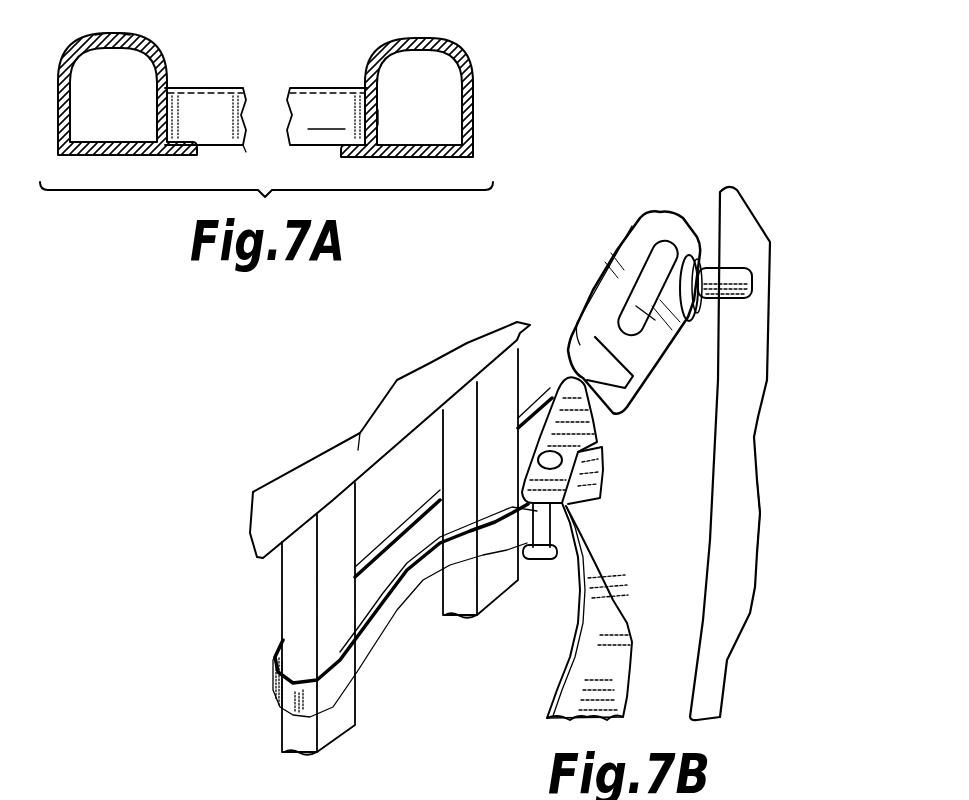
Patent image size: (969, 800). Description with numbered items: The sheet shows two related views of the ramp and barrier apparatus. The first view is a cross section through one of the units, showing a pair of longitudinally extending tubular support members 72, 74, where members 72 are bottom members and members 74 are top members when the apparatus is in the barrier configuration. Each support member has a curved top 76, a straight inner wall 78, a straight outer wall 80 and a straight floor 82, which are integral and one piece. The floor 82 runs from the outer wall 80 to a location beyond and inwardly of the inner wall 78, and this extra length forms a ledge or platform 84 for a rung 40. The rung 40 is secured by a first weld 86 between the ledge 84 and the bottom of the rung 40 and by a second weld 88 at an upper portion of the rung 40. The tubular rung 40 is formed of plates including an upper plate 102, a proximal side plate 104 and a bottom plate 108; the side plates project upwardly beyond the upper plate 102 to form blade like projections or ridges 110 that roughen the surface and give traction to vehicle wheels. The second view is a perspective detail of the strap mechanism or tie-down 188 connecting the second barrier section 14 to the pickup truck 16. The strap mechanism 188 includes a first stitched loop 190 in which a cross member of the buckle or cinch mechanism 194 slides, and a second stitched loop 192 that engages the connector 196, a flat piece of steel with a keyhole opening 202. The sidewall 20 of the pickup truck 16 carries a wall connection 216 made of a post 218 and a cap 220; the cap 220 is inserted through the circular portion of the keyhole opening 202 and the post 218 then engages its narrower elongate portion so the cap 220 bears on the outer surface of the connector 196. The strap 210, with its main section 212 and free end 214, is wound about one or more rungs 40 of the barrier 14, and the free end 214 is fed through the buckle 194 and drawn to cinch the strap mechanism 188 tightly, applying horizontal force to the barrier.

In FIG. 7B, the second ramp or barrier or apparatus section 14 is at (373, 561).
In FIG. 7B, the pickup truck 16 is at (760, 520).
In FIG. 7B, the sidewall 20 is at (769, 365).
In FIG. 7A, the rung 40 is at (228, 88).
In FIG. 7B, the rung 40 is at (282, 614).
In FIG. 7A, the tubular support member 72 is at (83, 38).
In FIG. 7A, the tubular support member 74 is at (453, 43).
In FIG. 7B, the tubular support member 74 is at (360, 437).
In FIG. 7A, the curved top 76 is at (113, 33).
In FIG. 7A, the straight inner wall 78 is at (380, 117).
In FIG. 7A, the straight outer wall 80 is at (58, 86).
In FIG. 7A, the straight floor 82 is at (458, 160).
In FIG. 7A, the ledge or platform 84 is at (178, 157).
In FIG. 7A, the first weld 86 is at (343, 150).
In FIG. 7A, the second weld 88 is at (363, 86).
In FIG. 7A, the upper plate 102 is at (213, 90).
In FIG. 7A, the proximal side plate 104 is at (332, 116).
In FIG. 7A, the bottom plate 108 is at (245, 152).
In FIG. 7A, the blade like projection or ridge 110 is at (243, 88).
In FIG. 7B, the strap mechanism or tie-down 188 is at (570, 642).
In FIG. 7B, the first stitched loop 190 is at (538, 398).
In FIG. 7B, the second stitched loop 192 is at (605, 410).
In FIG. 7B, the buckle or cinch mechanism 194 is at (605, 477).
In FIG. 7B, the first connector 196 is at (633, 222).
In FIG. 7B, the keyhole opening 202 is at (640, 310).
In FIG. 7B, the strap 210 is at (273, 683).
In FIG. 7B, the main section 212 is at (372, 665).
In FIG. 7B, the free end 214 is at (663, 680).
In FIG. 7B, the wall connection 216 is at (736, 260).
In FIG. 7B, the post 218 is at (750, 282).
In FIG. 7B, the cap 220 is at (706, 258).